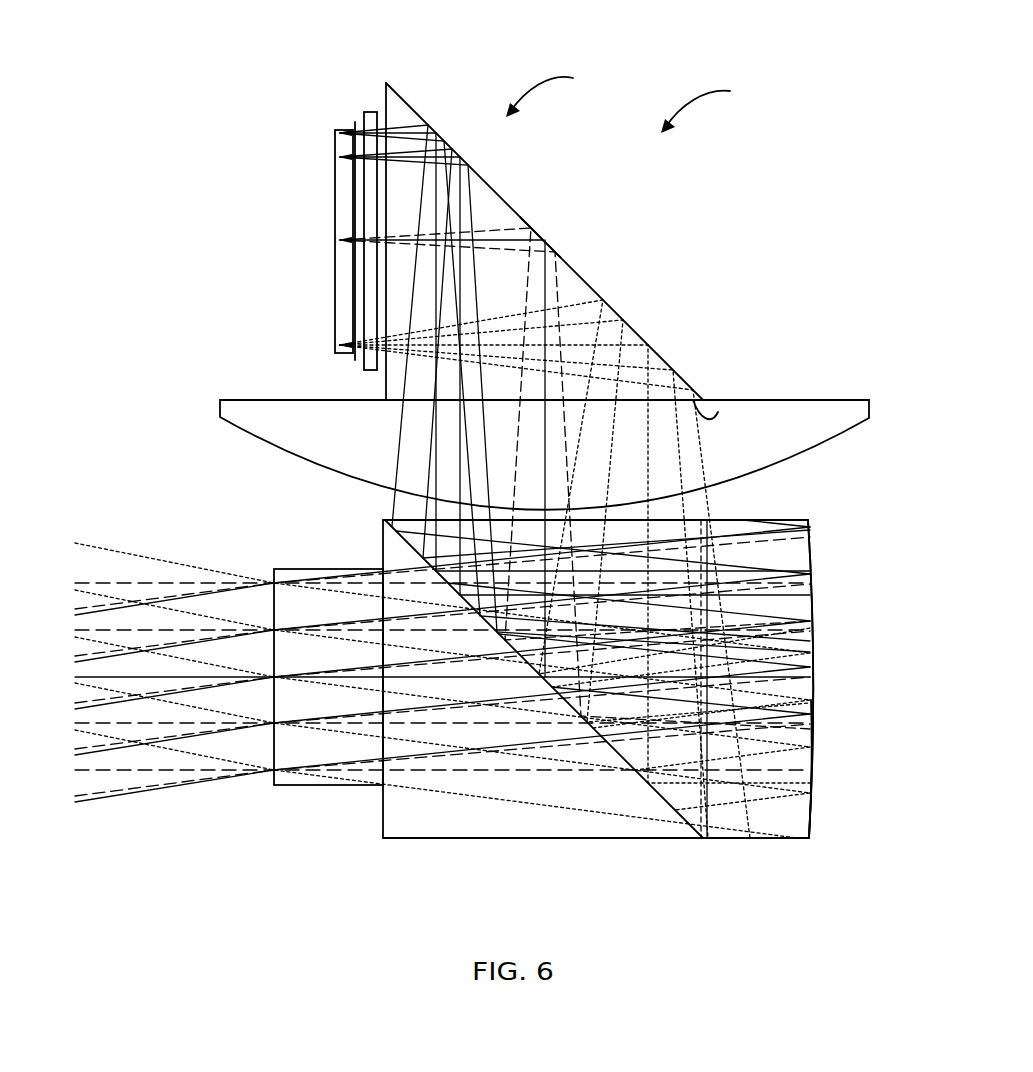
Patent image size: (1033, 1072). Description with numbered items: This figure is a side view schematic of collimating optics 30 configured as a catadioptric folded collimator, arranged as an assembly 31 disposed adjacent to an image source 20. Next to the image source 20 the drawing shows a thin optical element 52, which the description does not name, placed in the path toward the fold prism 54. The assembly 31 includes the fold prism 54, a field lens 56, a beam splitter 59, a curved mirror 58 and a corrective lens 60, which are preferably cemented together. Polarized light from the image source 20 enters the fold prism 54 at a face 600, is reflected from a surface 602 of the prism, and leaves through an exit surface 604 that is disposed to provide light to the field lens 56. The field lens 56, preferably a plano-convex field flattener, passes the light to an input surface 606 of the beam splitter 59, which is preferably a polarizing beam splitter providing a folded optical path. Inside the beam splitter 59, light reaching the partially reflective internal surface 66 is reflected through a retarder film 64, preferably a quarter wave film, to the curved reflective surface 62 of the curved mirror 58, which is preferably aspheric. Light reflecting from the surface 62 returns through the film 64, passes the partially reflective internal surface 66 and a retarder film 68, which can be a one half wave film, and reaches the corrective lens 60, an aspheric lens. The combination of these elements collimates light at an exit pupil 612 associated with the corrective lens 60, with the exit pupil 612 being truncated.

The image source 20 is at (340, 183).
The collimating lens 52 is at (370, 117).
The face 600 is at (383, 90).
The fold prism 54 is at (590, 280).
The surface 602 is at (540, 233).
The exit surface 604 is at (718, 412).
The field lens 56 is at (853, 400).
The input surface 606 is at (690, 520).
The beam splitter 59 is at (552, 840).
The partially reflective internal surface 66 is at (648, 798).
The retarder film 64 is at (705, 812).
The curved reflective surface 62 is at (800, 545).
The curved mirror 58 is at (810, 775).
The corrective lens 60 is at (290, 787).
The retarder film 68 is at (383, 813).
The exit pupil 612 is at (274, 602).
The assembly 31 is at (560, 91).
The collimating optics 30 is at (716, 104).